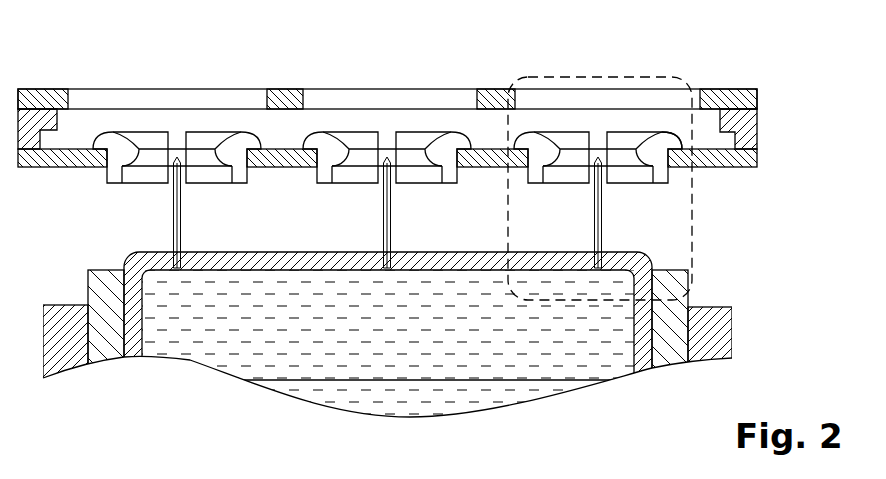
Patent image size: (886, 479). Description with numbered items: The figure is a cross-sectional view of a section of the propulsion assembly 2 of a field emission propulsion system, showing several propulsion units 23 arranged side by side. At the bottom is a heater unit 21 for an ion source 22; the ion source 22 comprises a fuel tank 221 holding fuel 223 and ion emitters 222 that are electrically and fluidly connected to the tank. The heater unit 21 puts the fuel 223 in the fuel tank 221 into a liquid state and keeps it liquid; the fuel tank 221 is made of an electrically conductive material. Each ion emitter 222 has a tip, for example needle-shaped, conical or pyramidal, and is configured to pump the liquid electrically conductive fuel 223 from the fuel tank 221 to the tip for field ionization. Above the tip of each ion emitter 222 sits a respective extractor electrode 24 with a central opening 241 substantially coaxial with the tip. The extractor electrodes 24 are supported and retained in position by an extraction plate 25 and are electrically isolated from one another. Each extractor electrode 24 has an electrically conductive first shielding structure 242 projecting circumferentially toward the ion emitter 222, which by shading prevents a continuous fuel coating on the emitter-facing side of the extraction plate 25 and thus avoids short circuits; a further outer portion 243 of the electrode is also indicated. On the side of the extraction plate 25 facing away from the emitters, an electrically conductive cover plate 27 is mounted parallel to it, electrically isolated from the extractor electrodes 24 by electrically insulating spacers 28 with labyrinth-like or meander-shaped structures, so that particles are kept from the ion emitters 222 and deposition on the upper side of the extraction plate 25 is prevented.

The propulsion assembly 2 is at (445, 339).
The heater unit 21 is at (668, 330).
The ion source 22 is at (469, 347).
The fuel tank 221 is at (655, 268).
The ion emitter 222 is at (197, 217).
The fuel 223 is at (582, 362).
The propulsion unit 23 is at (565, 77).
The extractor electrode 24 is at (443, 115).
The central opening 241 is at (627, 120).
The first shielding structure 242 is at (663, 172).
The nozzle edge 243 is at (667, 138).
The extraction plate 25 is at (497, 149).
The cover plate 27 is at (33, 89).
The electrically insulating spacer 28 is at (57, 114).